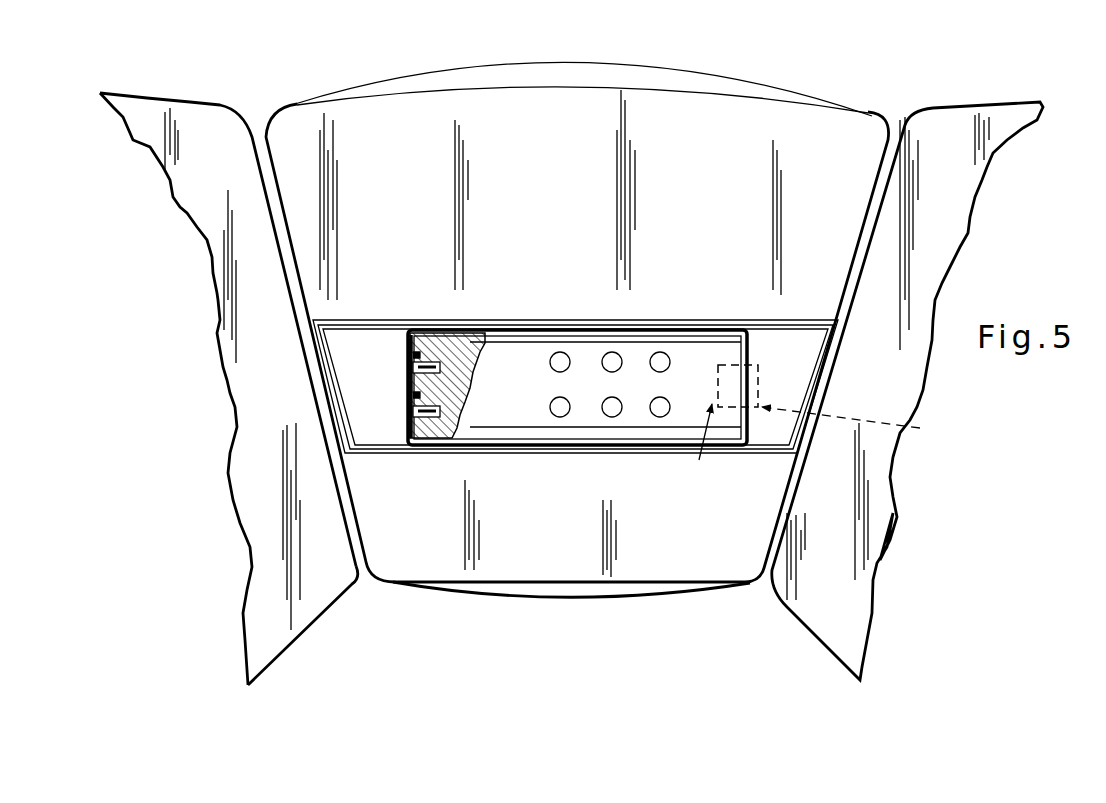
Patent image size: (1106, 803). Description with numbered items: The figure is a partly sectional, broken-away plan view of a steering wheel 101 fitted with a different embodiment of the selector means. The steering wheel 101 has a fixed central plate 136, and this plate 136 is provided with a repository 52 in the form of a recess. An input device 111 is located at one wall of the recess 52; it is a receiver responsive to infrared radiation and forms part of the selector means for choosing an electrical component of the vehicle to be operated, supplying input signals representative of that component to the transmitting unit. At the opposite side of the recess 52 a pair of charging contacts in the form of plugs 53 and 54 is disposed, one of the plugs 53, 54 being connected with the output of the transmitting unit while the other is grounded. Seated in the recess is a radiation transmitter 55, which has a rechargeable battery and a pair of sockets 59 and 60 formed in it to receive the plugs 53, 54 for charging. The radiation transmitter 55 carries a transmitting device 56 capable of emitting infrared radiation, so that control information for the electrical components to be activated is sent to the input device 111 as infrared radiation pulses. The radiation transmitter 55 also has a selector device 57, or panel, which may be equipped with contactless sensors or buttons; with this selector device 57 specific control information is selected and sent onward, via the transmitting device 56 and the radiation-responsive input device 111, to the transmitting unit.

The fixed central plate 136 is at (692, 117).
The steering wheel 101 is at (991, 96).
The repository 52 is at (728, 330).
The radiation transmitter 55 is at (522, 366).
The transmitting device 56 is at (725, 404).
The selector device 57 is at (577, 352).
The socket 59 is at (435, 368).
The socket 60 is at (433, 427).
The plug 53 is at (410, 368).
The plug 54 is at (410, 412).
The input device 111 is at (760, 390).